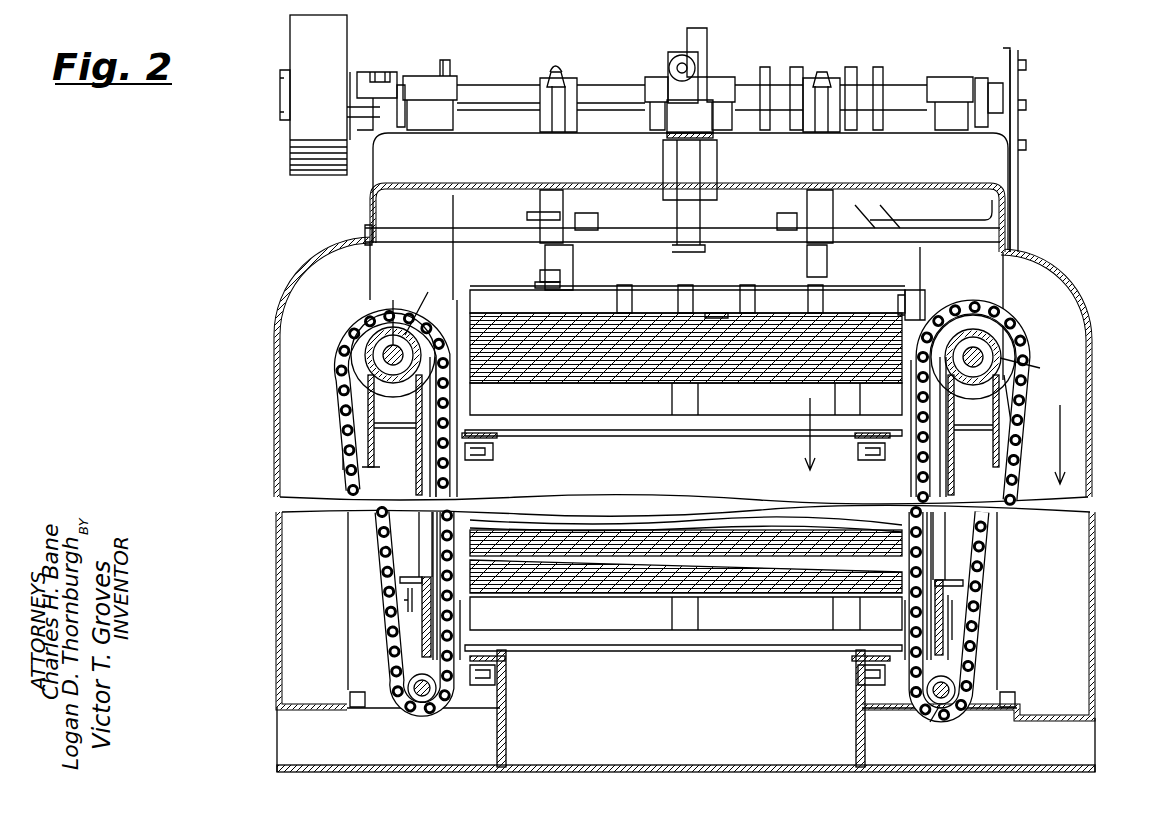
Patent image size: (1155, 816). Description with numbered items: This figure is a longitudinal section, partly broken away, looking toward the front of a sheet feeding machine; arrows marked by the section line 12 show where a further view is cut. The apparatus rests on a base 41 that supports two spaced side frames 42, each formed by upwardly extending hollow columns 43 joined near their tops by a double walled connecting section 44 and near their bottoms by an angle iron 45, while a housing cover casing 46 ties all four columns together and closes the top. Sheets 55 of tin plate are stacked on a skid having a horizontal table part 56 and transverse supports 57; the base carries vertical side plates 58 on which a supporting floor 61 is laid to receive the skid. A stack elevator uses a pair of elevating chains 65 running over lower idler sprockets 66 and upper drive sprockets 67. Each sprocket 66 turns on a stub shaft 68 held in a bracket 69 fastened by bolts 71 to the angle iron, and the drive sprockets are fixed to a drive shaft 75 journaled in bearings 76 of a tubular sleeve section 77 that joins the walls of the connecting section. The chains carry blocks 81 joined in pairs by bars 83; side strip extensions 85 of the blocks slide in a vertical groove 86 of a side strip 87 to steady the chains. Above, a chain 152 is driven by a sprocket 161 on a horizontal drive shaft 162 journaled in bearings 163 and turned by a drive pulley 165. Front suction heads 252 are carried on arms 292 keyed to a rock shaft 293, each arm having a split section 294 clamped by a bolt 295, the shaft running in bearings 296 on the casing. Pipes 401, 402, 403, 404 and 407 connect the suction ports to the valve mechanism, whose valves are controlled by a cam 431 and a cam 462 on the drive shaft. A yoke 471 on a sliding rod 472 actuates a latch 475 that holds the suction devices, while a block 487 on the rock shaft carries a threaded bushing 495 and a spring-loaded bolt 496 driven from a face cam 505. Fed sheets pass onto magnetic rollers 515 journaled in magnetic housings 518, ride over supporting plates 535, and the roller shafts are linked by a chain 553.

The section line 12 is at (920, 444).
The base 41 is at (1093, 732).
The side frame 42 is at (382, 255).
The hollow column 43 is at (368, 450).
The connecting section 44 is at (368, 420).
The angle iron 45 is at (420, 638).
The housing cover casing 46 is at (990, 182).
The sheets 55 is at (570, 385).
The horizontal table part 56 is at (643, 385).
The transverse supports 57 is at (695, 400).
The side plates 58 is at (506, 697).
The supporting floor 61 is at (668, 437).
The elevating chains 65 is at (350, 476).
The lower idler sprocket 66 is at (420, 705).
The upper drive sprocket 67 is at (355, 342).
The stub shaft 68 is at (926, 729).
The bracket 69 is at (955, 648).
The bolts 71 is at (406, 610).
The drive shaft 75 is at (383, 355).
The bearings 76 is at (392, 308).
The tubular sleeve section 77 is at (736, 323).
The blocks 81 is at (494, 452).
The bar 83 is at (498, 436).
The side strip extensions 85 is at (462, 630).
The vertical groove 86 is at (903, 612).
The side strip 87 is at (462, 476).
The chain 152 is at (1020, 154).
The sprocket 161 is at (1005, 88).
The horizontal drive shaft 162 is at (280, 100).
The bearings 163 is at (378, 78).
The drive pulley 165 is at (300, 38).
The front suction head 252 is at (560, 195).
The arm 292 is at (548, 132).
The rock shaft 293 is at (510, 96).
The split section 294 is at (572, 85).
The bolt 295 is at (553, 72).
The bearings 296 is at (455, 90).
The pipe 401 is at (962, 228).
The pipe 402 is at (904, 214).
The pipe 403 is at (545, 262).
The pipe 404 is at (528, 216).
The pipe 407 is at (867, 214).
The cam 431 is at (880, 68).
The cam 462 is at (445, 60).
The yoke 471 is at (562, 285).
The sliding rod 472 is at (562, 275).
The latch 475 is at (598, 220).
The block 487 is at (690, 108).
The threaded bushing 495 is at (680, 62).
The bolt 496 is at (672, 62).
The face cam 505 is at (698, 30).
The magnetic rollers 515 is at (690, 296).
The magnetic housing 518 is at (650, 296).
The supporting plates 535 is at (730, 297).
The chain 553 is at (905, 300).